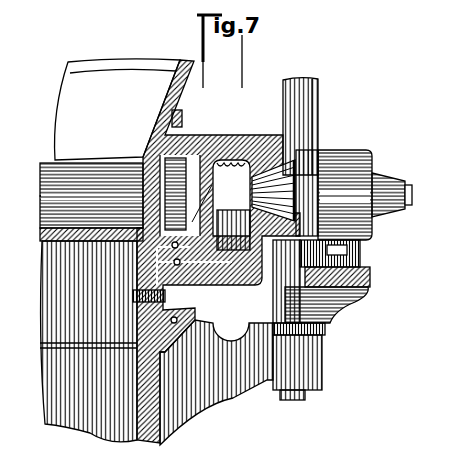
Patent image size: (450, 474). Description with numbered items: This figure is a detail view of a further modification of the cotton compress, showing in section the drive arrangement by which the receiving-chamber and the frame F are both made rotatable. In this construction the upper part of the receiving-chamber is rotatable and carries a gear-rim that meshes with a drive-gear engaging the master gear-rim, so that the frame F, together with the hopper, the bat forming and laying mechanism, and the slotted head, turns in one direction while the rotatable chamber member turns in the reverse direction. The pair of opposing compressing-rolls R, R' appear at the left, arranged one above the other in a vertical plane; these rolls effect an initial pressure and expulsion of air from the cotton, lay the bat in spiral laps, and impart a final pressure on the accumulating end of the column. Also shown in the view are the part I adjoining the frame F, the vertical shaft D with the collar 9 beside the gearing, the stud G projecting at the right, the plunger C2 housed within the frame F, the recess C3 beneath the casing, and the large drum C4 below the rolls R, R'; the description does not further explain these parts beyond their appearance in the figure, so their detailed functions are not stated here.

The standard I is at (117, 109).
The frame F is at (244, 114).
The vertical shaft D is at (318, 101).
The collar 9 is at (316, 150).
The stud G is at (408, 188).
The spring plunger C2 is at (231, 205).
The recess C3 is at (216, 368).
The drum C4 is at (91, 335).
The roll R is at (76, 211).
The roll R' is at (73, 179).